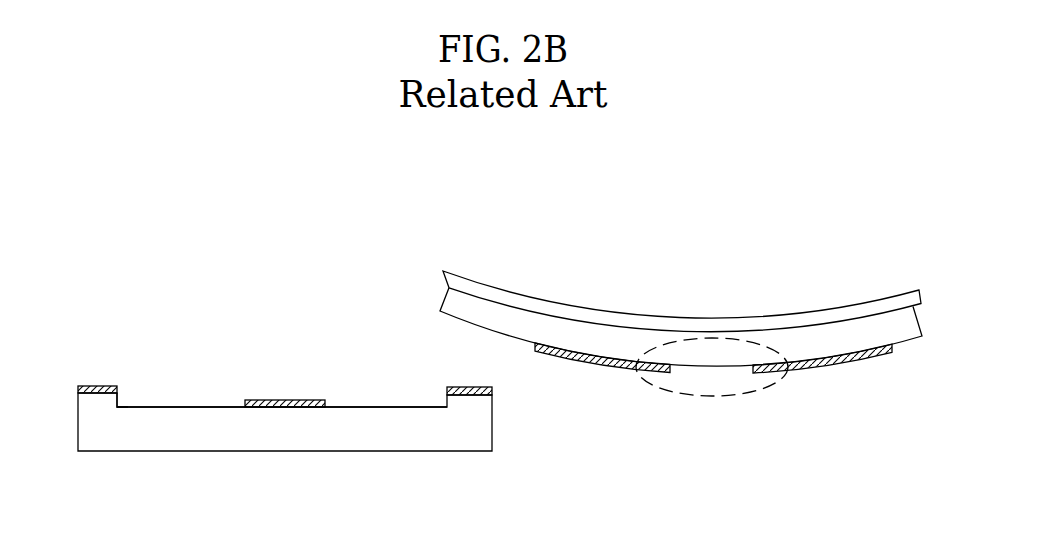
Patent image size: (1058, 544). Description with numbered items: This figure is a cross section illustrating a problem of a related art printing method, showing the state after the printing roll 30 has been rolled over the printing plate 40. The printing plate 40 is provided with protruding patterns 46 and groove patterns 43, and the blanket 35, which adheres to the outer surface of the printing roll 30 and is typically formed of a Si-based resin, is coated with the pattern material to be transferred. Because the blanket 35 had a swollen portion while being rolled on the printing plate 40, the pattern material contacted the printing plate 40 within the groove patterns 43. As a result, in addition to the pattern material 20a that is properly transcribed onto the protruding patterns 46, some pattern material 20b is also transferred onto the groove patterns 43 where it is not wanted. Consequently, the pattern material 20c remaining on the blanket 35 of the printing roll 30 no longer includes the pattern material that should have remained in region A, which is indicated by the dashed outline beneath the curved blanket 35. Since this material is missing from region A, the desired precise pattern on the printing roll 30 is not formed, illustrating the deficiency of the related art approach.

The pattern material transcribed on the protruding patterns 20a is at (97, 385).
The pattern material transferred onto the groove patterns 20b is at (286, 399).
The pattern material remaining on the blanket 20c is at (592, 357).
The printing roll 30 is at (514, 298).
The blanket 35 is at (455, 304).
The printing plate 40 is at (414, 434).
The groove patterns 43 is at (157, 397).
The protruding patterns 46 is at (114, 403).
The region A is at (725, 398).